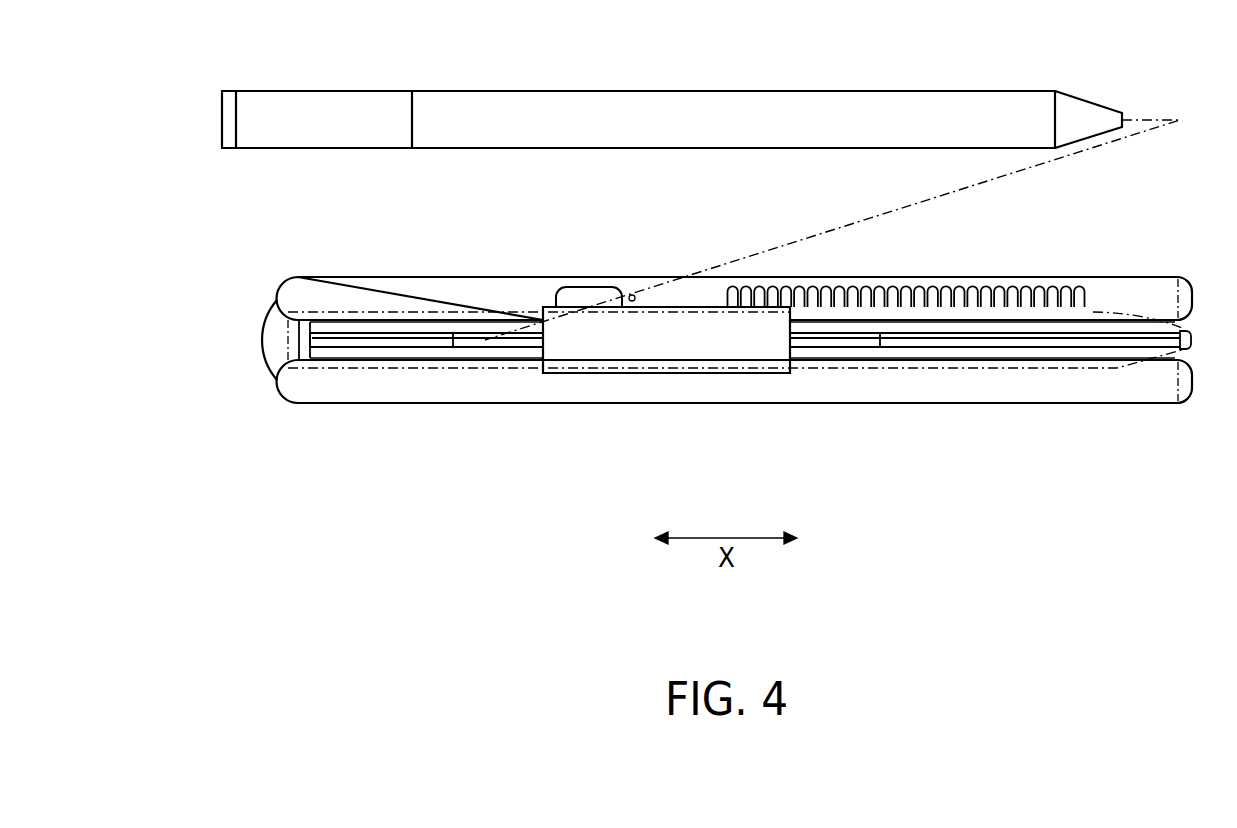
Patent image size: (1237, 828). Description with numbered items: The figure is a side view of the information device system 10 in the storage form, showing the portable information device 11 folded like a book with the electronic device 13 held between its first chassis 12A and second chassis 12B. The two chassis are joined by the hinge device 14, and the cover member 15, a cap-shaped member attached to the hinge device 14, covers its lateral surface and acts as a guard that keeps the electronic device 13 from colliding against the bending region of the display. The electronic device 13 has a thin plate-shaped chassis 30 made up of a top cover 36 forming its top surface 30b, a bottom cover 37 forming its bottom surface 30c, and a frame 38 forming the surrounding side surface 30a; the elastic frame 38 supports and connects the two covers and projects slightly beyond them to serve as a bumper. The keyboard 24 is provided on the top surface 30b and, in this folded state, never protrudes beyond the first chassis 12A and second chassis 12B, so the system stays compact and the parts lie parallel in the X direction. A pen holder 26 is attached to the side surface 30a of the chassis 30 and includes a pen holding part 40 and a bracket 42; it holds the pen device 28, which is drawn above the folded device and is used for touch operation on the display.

The information device system 10 is at (242, 199).
The portable information device 11 is at (558, 244).
The first chassis 12A is at (768, 382).
The second chassis 12B is at (412, 296).
The electronic device 13 is at (456, 430).
The hinge device 14 is at (255, 296).
The cover member 15 is at (277, 343).
The keyboard 24 is at (418, 340).
The pen holder 26 is at (602, 345).
The pen device 28 is at (675, 82).
The chassis 30 is at (960, 343).
The side surface 30a is at (1030, 404).
The top surface 30b is at (906, 264).
The bottom surface 30c is at (1123, 403).
The top cover 36 is at (968, 318).
The bottom cover 37 is at (1097, 362).
The frame 38 is at (925, 342).
The pen holding part 40 is at (700, 345).
The bracket 42 is at (840, 353).